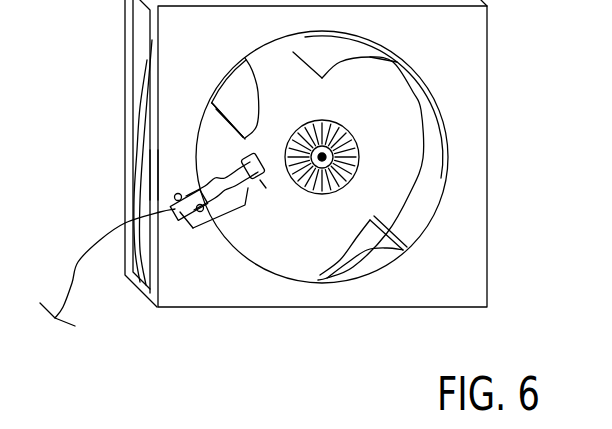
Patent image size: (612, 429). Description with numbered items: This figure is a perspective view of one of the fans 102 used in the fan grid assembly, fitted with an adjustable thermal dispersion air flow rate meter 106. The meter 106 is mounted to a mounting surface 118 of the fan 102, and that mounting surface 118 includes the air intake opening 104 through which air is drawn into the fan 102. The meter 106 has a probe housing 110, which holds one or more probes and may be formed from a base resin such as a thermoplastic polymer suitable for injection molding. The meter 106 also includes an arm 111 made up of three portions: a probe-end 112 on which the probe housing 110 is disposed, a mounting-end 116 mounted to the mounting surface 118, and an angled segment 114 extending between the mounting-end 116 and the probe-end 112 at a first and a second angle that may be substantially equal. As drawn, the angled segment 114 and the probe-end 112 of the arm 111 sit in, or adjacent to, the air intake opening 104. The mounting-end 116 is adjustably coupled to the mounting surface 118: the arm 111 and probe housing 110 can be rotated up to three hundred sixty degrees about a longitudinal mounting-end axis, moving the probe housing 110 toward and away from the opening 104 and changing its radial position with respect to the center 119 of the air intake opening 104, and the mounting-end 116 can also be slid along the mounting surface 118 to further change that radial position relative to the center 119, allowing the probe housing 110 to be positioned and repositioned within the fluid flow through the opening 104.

The fan 102 is at (535, 78).
The air intake opening 104 is at (440, 145).
The thermal dispersion air flow rate meter 106 is at (266, 188).
The probe housing 110 is at (243, 137).
The arm 111 is at (248, 190).
The probe-end 112 is at (240, 160).
The angled segment 114 is at (172, 168).
The mounting-end 116 is at (177, 217).
The mounting surface 118 is at (172, 172).
The center 119 is at (325, 168).